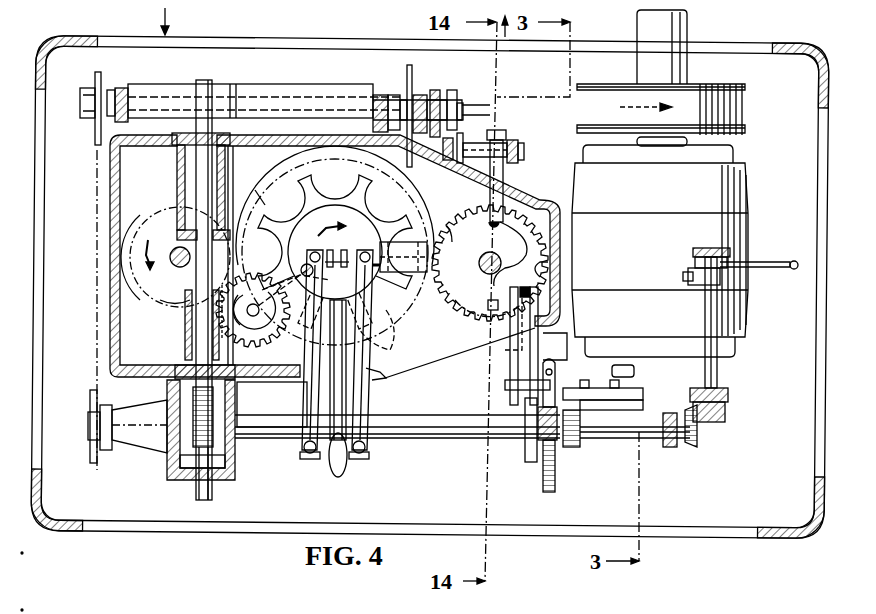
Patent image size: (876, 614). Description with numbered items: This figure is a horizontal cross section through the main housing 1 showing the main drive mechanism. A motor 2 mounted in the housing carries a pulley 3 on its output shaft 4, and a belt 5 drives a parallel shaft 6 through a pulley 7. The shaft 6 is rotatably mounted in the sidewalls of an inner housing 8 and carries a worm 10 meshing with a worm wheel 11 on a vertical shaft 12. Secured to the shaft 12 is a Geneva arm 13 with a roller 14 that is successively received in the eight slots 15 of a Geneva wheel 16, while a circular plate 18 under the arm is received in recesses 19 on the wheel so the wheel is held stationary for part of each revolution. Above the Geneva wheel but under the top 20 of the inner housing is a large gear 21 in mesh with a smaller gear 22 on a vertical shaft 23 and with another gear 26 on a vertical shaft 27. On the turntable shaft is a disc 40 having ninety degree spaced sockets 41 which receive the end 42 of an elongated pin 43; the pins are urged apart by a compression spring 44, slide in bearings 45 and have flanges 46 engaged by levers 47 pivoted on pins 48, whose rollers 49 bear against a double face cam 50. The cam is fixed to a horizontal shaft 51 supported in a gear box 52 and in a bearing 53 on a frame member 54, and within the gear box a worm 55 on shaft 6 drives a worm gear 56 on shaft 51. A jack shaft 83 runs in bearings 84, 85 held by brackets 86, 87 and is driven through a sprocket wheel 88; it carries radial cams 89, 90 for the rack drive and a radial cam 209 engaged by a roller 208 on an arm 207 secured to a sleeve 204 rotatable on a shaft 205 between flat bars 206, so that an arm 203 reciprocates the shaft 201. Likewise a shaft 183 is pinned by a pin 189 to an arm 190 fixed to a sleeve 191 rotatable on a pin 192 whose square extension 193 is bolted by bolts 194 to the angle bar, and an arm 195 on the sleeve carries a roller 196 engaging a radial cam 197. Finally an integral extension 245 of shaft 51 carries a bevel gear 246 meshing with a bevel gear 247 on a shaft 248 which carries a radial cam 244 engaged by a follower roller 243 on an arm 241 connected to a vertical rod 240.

The housing 1 is at (779, 542).
The motor 2 is at (748, 200).
The pulley 3 is at (720, 84).
The output shaft 4 is at (688, 32).
The belt 5 is at (520, 97).
The shaft 6 is at (198, 172).
The pulley 7 is at (262, 84).
The inner housing 8 is at (108, 334).
The worm 10 is at (185, 330).
The worm wheel 11 is at (235, 325).
The shaft 12 is at (258, 342).
The Geneva arm 13 is at (264, 275).
The roller 14 is at (300, 266).
The slots 15 is at (305, 178).
The Geneva wheel 16 is at (258, 198).
The circular plate 18 is at (270, 372).
The recesses 19 is at (340, 190).
The top 20 is at (356, 222).
The gear 21 is at (456, 226).
The gear 22 is at (532, 212).
The shaft 23 is at (492, 286).
The gear 26 is at (170, 312).
The shaft 27 is at (166, 290).
The disc 40 is at (478, 268).
The sockets 41 is at (484, 325).
The end 42 is at (424, 328).
The pin 43 is at (318, 268).
The compression spring 44 is at (335, 247).
The bearings 45 is at (382, 330).
The flanges 46 is at (316, 252).
The levers 47 is at (310, 400).
The pins 48 is at (387, 375).
The rollers 49 is at (302, 454).
The double face cam 50 is at (344, 472).
The shaft 51 is at (482, 441).
The gear box 52 is at (235, 470).
The bearing 53 is at (572, 447).
The frame member 54 is at (624, 405).
The worm 55 is at (175, 448).
The worm gear 56 is at (215, 400).
The jack shaft 83 is at (318, 100).
The bearing 84 is at (124, 88).
The bearing 85 is at (396, 97).
The bracket 86 is at (130, 100).
The bracket 87 is at (382, 95).
The sprocket wheel 88 is at (93, 86).
The radial cam 89 is at (437, 90).
The radial cam 90 is at (412, 69).
The shaft 183 is at (548, 270).
The pin 189 is at (545, 323).
The arm 190 is at (520, 372).
The sleeve 191 is at (520, 380).
The pin 192 is at (508, 395).
The extension 193 is at (630, 392).
The bolts 194 is at (597, 378).
The arm 195 is at (556, 390).
The roller 196 is at (533, 462).
The radial cam 197 is at (552, 488).
The shaft 201 is at (503, 194).
The arm 203 is at (503, 180).
The sleeve 204 is at (486, 143).
The shaft 205 is at (526, 145).
The flat bars 206 is at (513, 140).
The arm 207 is at (455, 135).
The roller 208 is at (458, 88).
The radial cam 209 is at (462, 106).
The rod 240 is at (796, 269).
The arm 241 is at (755, 262).
The follower roller 243 is at (728, 275).
The radial cam 244 is at (683, 275).
The extension 245 is at (626, 438).
The bevel gear 246 is at (690, 445).
The bevel gear 247 is at (728, 411).
The shaft 248 is at (718, 318).